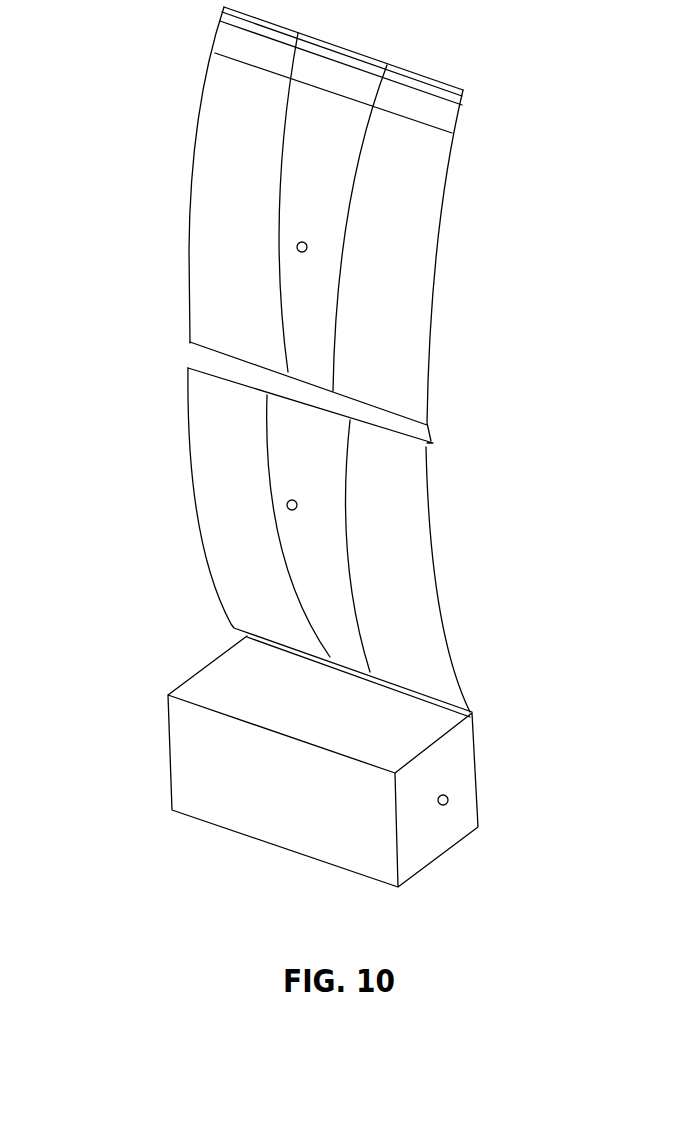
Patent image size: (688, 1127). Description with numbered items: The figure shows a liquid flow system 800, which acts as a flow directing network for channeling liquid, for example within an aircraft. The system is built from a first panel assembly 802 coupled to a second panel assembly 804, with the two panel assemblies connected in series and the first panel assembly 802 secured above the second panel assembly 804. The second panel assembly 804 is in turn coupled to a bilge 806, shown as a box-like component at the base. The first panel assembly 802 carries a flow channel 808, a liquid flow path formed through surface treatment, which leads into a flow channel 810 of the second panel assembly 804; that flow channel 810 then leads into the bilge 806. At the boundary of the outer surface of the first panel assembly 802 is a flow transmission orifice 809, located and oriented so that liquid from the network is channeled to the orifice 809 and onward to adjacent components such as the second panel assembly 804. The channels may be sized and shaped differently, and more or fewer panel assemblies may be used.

The liquid flow system 800 is at (321, 447).
The first panel assembly 802 is at (306, 244).
The second panel assembly 804 is at (296, 500).
The bilge 806 is at (448, 794).
The flow channel 808 is at (310, 303).
The flow transmission orifice 809 is at (322, 375).
The flow channel 810 is at (325, 587).